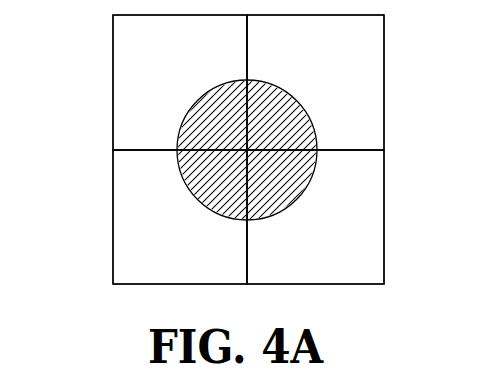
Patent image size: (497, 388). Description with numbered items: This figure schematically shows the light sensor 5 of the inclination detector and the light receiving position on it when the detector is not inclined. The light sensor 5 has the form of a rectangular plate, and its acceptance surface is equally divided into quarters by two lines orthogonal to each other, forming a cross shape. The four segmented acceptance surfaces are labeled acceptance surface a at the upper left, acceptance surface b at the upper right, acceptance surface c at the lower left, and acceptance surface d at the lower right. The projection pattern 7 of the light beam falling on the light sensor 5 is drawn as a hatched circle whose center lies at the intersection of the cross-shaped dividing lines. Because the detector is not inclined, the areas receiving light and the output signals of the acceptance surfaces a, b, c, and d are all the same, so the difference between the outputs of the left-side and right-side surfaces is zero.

The light sensor 5 is at (384, 72).
The projection pattern 7 is at (178, 128).
The acceptance surface a is at (180, 82).
The acceptance surface b is at (315, 82).
The acceptance surface c is at (180, 217).
The acceptance surface d is at (315, 217).